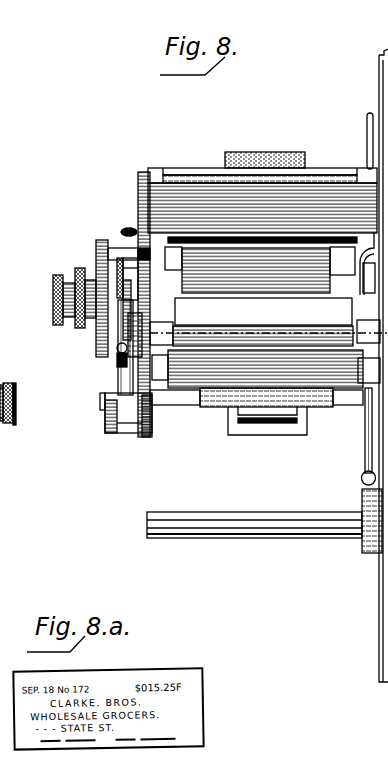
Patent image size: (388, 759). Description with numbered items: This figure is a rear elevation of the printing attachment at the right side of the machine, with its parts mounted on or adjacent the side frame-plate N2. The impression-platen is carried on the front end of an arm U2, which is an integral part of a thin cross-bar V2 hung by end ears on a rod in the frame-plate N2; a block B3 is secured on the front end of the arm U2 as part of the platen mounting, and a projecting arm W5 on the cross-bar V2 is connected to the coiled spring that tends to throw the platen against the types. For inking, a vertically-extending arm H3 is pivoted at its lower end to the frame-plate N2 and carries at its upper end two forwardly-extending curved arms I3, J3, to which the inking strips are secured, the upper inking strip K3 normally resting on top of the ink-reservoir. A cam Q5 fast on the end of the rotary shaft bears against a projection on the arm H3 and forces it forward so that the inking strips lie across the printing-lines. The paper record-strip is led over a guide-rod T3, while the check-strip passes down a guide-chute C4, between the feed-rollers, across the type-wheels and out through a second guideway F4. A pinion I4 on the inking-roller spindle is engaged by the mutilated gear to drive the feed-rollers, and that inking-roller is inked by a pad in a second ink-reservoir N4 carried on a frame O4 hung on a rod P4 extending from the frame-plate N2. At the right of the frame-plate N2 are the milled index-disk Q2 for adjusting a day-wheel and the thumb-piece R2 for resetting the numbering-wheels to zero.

In FIG. 8, the side frame-plate N2 is at (138, 206).
In FIG. 8, the inking strip K3 is at (114, 243).
In FIG. 8, the curved arm I3 is at (96, 247).
In FIG. 8, the guide-chute C4 is at (262, 213).
In FIG. 8, the projecting arm W5 is at (348, 445).
In FIG. 8, the second guideway F4 is at (236, 250).
In FIG. 8, the pinion I4 is at (309, 267).
In FIG. 8, the cam Q5 is at (137, 343).
In FIG. 8, the frame O4 is at (209, 343).
In FIG. 8, the second ink-reservoir N4 is at (263, 311).
In FIG. 8, the rod P4 is at (310, 331).
In FIG. 8, the thumb-piece R2 is at (60, 318).
In FIG. 8A, the thumb-piece R2 is at (11, 424).
In FIG. 8, the index-disk Q2 is at (80, 332).
In FIG. 8A, the index-disk Q2 is at (8, 425).
In FIG. 8, the curved arm J3 is at (96, 346).
In FIG. 8, the vertically-extending arm H3 is at (118, 368).
In FIG. 8, the guide-rod T3 is at (266, 369).
In FIG. 8, the cross-bar V2 is at (183, 400).
In FIG. 8, the arm U2 is at (262, 415).
In FIG. 8, the block B3 is at (276, 425).